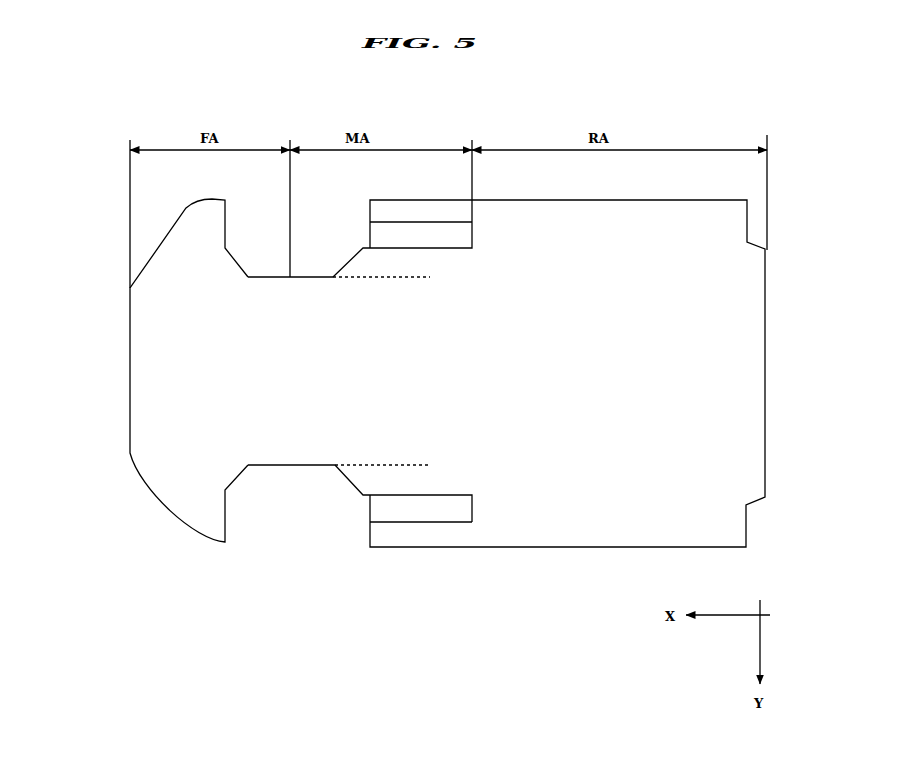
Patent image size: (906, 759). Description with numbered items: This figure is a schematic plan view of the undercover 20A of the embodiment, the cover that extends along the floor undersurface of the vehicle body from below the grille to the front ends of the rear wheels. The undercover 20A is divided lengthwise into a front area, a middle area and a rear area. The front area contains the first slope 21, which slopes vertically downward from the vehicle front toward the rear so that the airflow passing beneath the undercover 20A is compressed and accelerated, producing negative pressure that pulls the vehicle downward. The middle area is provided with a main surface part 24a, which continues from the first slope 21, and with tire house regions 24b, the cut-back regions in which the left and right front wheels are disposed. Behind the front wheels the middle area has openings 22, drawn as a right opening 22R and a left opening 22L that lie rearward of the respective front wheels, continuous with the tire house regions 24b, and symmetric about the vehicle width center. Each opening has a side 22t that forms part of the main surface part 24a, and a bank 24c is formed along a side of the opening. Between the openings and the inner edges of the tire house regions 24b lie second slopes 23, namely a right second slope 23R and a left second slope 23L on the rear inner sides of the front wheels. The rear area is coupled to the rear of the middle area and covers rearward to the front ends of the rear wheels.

The undercover 20A is at (119, 92).
The first slope 21 is at (177, 378).
The openings 22 is at (417, 359).
The left opening 22L is at (415, 232).
The right opening 22R is at (427, 508).
The side of the opening 22t is at (438, 227).
The second slope 23 is at (362, 396).
The left second slope 23L is at (392, 260).
The right second slope 23R is at (383, 478).
The main surface part 24a is at (292, 352).
The tire house regions 24b is at (339, 377).
The bank 24c is at (398, 208).